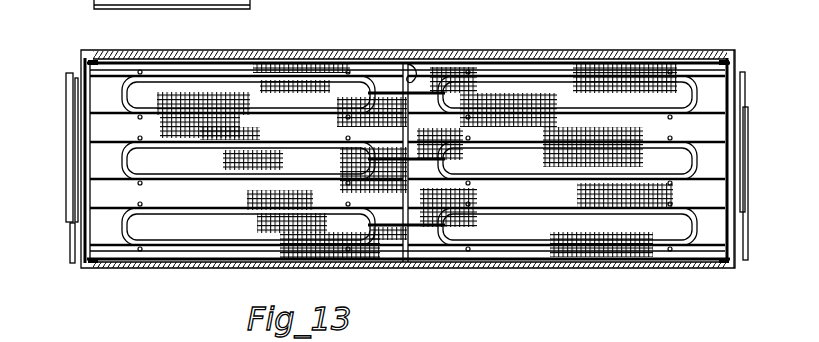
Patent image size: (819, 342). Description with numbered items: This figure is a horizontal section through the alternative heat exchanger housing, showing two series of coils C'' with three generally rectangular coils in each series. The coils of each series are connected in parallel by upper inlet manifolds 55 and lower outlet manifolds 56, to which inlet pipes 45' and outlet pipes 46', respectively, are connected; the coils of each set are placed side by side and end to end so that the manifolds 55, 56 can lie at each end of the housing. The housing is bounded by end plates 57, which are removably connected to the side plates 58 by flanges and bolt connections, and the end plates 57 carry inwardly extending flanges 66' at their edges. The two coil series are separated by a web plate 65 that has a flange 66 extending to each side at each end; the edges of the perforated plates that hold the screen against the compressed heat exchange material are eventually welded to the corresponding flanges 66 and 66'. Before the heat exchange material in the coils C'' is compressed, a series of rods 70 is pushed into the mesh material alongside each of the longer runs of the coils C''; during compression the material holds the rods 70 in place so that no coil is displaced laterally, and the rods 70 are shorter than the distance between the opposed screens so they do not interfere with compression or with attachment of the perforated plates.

The side plate 58 is at (465, 62).
The inwardly extending flange 66' is at (403, 154).
The outlet pipe 46' is at (444, 181).
The inlet pipe 45' is at (416, 153).
The upper inlet manifold 55 is at (68, 114).
The end plate 57 is at (80, 162).
The lower outlet manifold 56 is at (72, 248).
The coil C'' is at (407, 163).
The flange 66 is at (419, 154).
The web plate 65 is at (405, 62).
The rod 70 is at (141, 252).